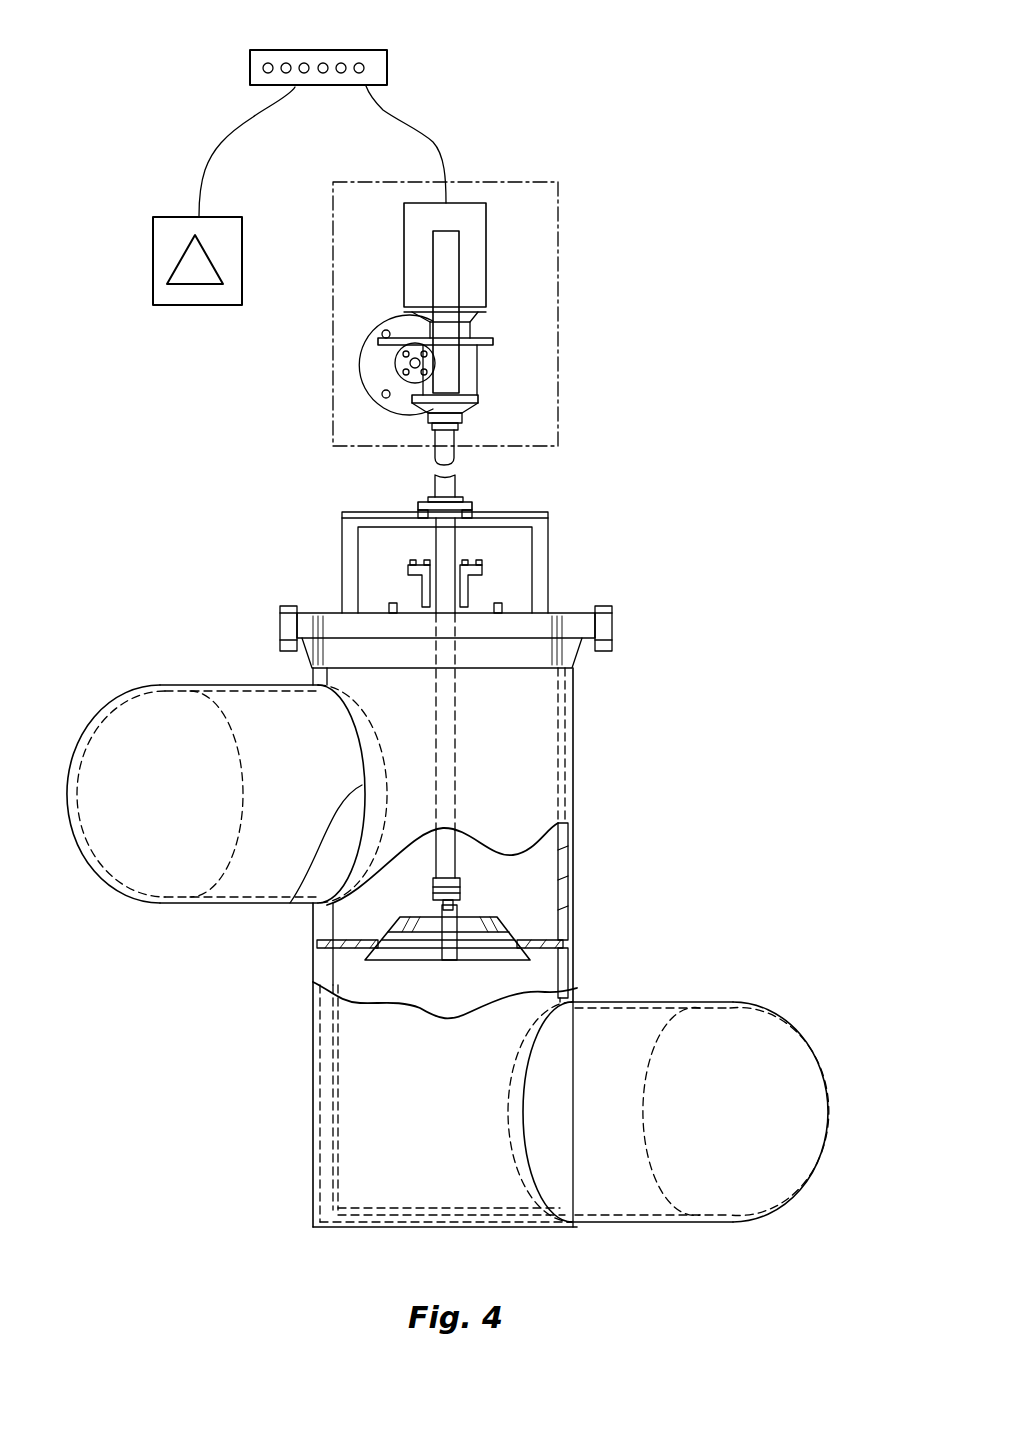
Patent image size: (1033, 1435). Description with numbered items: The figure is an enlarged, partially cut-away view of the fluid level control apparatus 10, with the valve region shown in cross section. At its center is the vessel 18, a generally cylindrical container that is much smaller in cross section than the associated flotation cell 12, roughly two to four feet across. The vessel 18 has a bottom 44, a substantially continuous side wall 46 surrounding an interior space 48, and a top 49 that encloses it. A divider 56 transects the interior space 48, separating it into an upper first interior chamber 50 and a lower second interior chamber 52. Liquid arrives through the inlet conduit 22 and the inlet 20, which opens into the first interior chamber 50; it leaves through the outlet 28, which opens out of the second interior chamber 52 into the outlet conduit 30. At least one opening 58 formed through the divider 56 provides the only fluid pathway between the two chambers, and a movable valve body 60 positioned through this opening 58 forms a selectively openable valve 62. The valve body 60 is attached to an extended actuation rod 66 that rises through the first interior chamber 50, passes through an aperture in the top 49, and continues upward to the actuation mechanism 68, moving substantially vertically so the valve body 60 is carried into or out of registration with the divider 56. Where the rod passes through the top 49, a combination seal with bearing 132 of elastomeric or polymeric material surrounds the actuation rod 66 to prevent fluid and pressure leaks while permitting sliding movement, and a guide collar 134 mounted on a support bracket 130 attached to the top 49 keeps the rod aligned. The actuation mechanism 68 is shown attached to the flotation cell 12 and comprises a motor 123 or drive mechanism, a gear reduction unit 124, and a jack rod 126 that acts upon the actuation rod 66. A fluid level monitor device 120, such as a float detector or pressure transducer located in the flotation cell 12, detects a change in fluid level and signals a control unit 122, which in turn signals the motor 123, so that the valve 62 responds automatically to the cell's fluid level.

The fluid level control apparatus 10 is at (736, 577).
The flotation cell 12 is at (538, 360).
The vessel 18 is at (575, 715).
The inlet 20 is at (292, 903).
The inlet conduit 22 is at (228, 705).
The outlet 28 is at (528, 1078).
The outlet conduit 30 is at (663, 1020).
The bottom 44 is at (357, 1228).
The wall 46 is at (313, 1137).
The interior space 48 is at (556, 838).
The top 49 is at (565, 613).
The first interior chamber 50 is at (545, 870).
The second interior chamber 52 is at (377, 992).
The divider 56 is at (547, 927).
The opening 58 is at (513, 924).
The movable valve body 60 is at (415, 916).
The selectively openable valve 62 is at (360, 972).
The actuation rod 66 is at (457, 550).
The actuation mechanism 68 is at (532, 342).
The fluid level monitor device 120 is at (152, 275).
The control unit 122 is at (315, 50).
The motor 123 is at (478, 292).
The gear reduction unit 124 is at (467, 376).
The jack rod 126 is at (455, 252).
The support bracket 130 is at (345, 550).
The combination seal with bearing 132 is at (462, 590).
The guide collar 134 is at (425, 499).